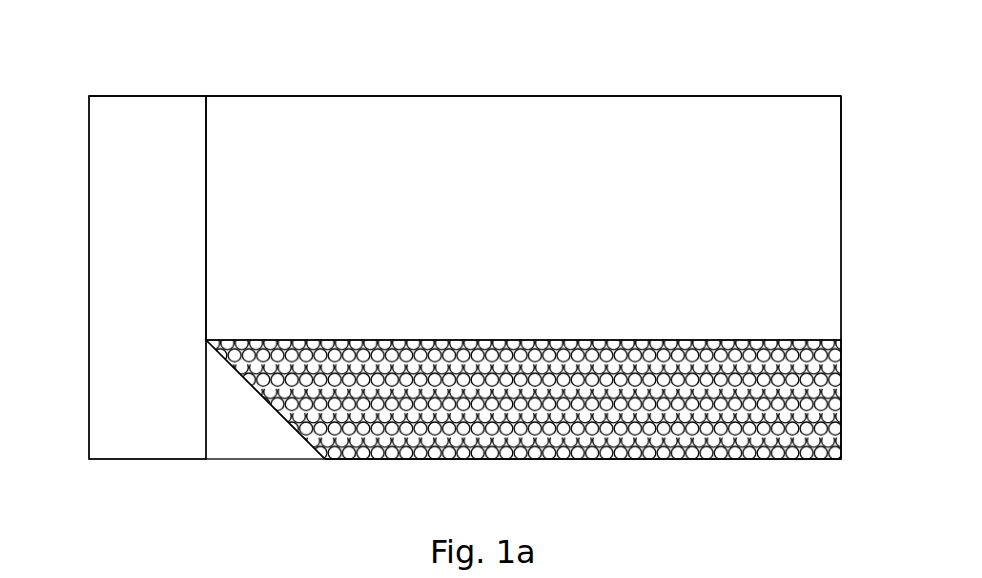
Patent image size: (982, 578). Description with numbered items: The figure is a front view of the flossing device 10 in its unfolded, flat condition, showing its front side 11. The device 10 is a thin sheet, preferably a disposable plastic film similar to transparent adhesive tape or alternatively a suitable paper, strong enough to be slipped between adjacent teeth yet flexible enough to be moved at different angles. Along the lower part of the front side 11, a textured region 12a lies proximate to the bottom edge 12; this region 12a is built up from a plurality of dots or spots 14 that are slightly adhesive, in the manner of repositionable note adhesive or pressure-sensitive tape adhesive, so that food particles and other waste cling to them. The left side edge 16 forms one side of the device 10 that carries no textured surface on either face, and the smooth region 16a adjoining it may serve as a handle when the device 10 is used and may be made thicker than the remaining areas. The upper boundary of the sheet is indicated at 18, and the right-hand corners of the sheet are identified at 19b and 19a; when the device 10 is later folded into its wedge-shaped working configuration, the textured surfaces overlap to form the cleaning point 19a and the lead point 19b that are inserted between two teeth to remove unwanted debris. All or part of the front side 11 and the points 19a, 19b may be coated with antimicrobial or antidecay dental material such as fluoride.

The flossing device 10 is at (660, 64).
The front side 11 is at (469, 253).
The bottom edge 12 is at (478, 460).
The textured region 12a is at (693, 433).
The dots or spots 14 is at (812, 359).
The side edge 16 is at (89, 299).
The smooth region 16a is at (147, 138).
The top surface 18 is at (386, 96).
The cleaning point 19a is at (841, 459).
The lead point 19b is at (841, 96).